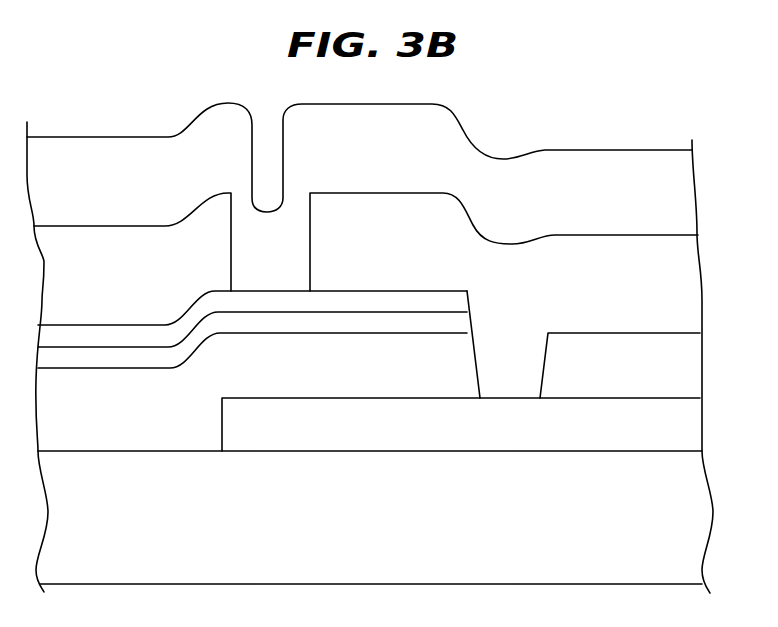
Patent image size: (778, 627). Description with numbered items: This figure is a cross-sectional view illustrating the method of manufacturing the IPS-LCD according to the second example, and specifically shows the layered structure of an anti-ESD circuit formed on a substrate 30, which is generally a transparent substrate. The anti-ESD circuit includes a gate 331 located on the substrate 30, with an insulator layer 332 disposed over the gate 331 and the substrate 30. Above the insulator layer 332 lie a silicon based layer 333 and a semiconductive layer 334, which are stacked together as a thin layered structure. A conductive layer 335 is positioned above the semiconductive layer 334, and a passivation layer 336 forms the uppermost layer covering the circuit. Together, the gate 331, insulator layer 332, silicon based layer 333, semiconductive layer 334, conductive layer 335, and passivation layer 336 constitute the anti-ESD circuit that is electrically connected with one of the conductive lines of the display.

The substrate 30 is at (413, 536).
The gate 331 is at (496, 442).
The insulator layer 332 is at (173, 421).
The silicon based layer 333 is at (461, 323).
The semiconductive layer 334 is at (458, 302).
The conductive layer 335 is at (117, 292).
The passivation layer 336 is at (380, 156).